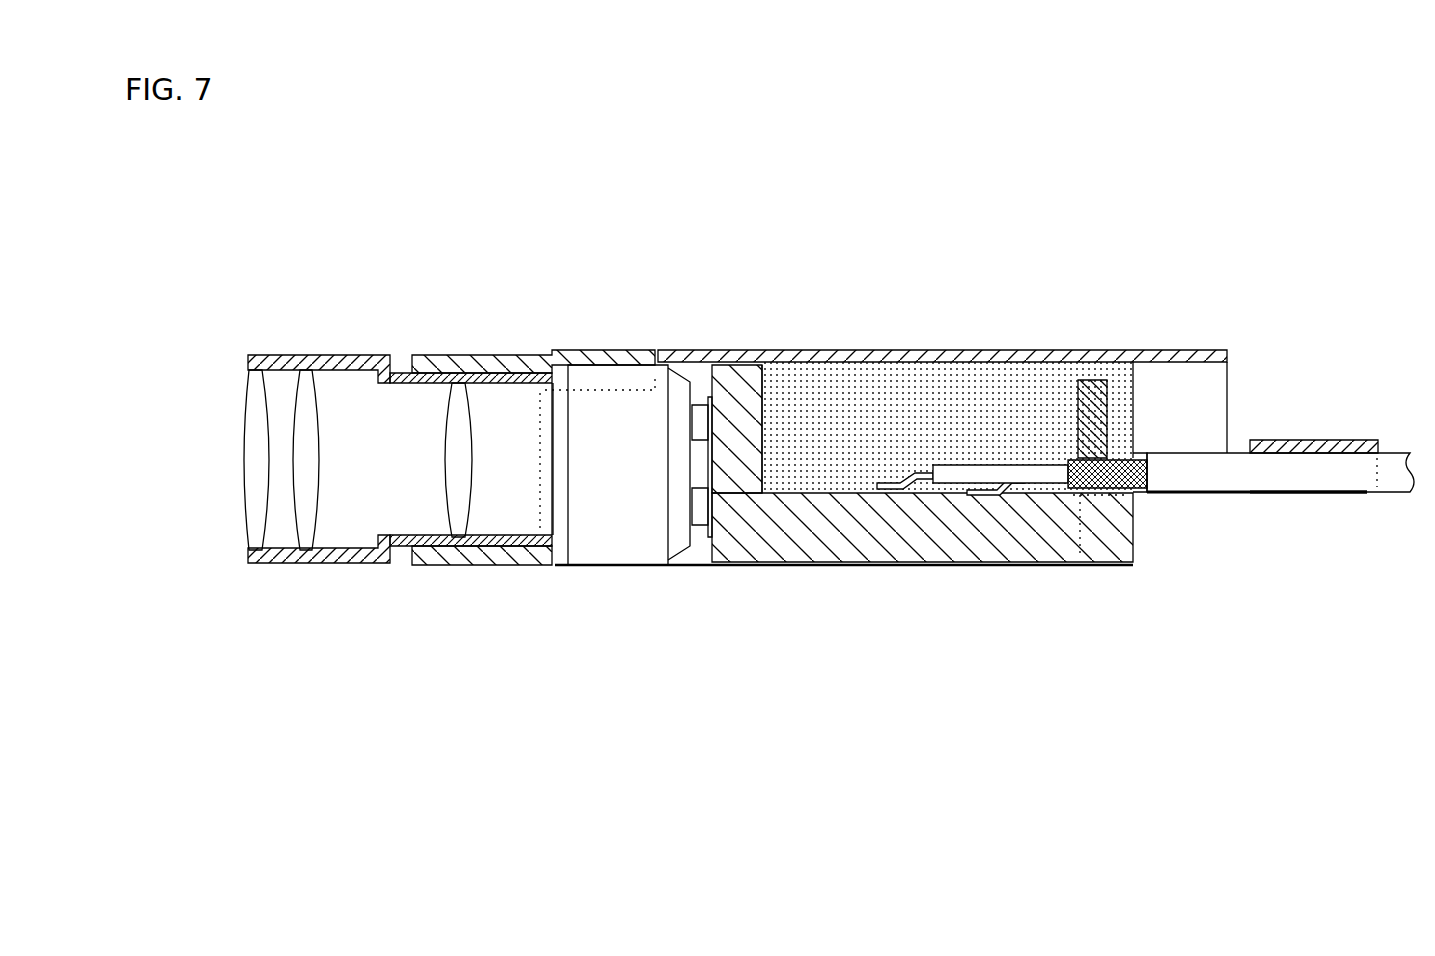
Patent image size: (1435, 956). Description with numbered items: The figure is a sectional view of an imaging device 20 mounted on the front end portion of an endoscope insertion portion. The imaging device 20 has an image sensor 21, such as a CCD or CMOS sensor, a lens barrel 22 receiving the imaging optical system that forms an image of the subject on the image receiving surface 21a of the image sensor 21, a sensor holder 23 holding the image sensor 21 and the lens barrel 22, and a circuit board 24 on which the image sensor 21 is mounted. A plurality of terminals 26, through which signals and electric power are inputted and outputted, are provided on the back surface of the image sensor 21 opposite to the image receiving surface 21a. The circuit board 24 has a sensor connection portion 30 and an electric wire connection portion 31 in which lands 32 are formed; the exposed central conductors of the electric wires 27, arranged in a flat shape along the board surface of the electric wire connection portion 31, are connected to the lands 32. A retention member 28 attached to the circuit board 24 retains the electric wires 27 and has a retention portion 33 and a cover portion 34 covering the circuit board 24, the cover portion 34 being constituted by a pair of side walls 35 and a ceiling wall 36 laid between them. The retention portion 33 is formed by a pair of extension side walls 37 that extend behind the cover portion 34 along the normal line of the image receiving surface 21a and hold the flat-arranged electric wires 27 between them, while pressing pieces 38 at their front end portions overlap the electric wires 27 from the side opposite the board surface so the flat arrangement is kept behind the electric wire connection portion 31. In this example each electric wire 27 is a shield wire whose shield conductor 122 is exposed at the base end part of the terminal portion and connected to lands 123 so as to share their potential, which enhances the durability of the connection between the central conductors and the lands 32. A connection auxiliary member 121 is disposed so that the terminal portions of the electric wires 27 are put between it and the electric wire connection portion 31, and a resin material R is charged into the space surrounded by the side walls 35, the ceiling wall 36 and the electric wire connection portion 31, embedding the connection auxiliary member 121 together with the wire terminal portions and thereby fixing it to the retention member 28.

The imaging device 20 is at (240, 210).
The image sensor 21 is at (622, 540).
The image receiving surface 21a is at (568, 492).
The lens barrel 22 is at (311, 355).
The sensor holder 23 is at (505, 355).
The circuit board 24 is at (922, 386).
The terminals 26 is at (700, 404).
The electric wires 27 is at (1183, 485).
The retention member 28 is at (1268, 416).
The sensor connection portion 30 is at (738, 373).
The electric wire connection portion 31 is at (823, 490).
The lands 32 is at (860, 493).
The retention portion 33 is at (1305, 440).
The cover portion 34 is at (1135, 360).
The side walls 35 is at (693, 567).
The ceiling wall 36 is at (1000, 348).
The extension side walls 37 is at (1287, 497).
The pressing pieces 38 is at (1363, 438).
The connection auxiliary member 121 is at (1092, 378).
The shield conductor 122 is at (1097, 495).
The lands 123 is at (1040, 497).
The resin material R is at (910, 407).